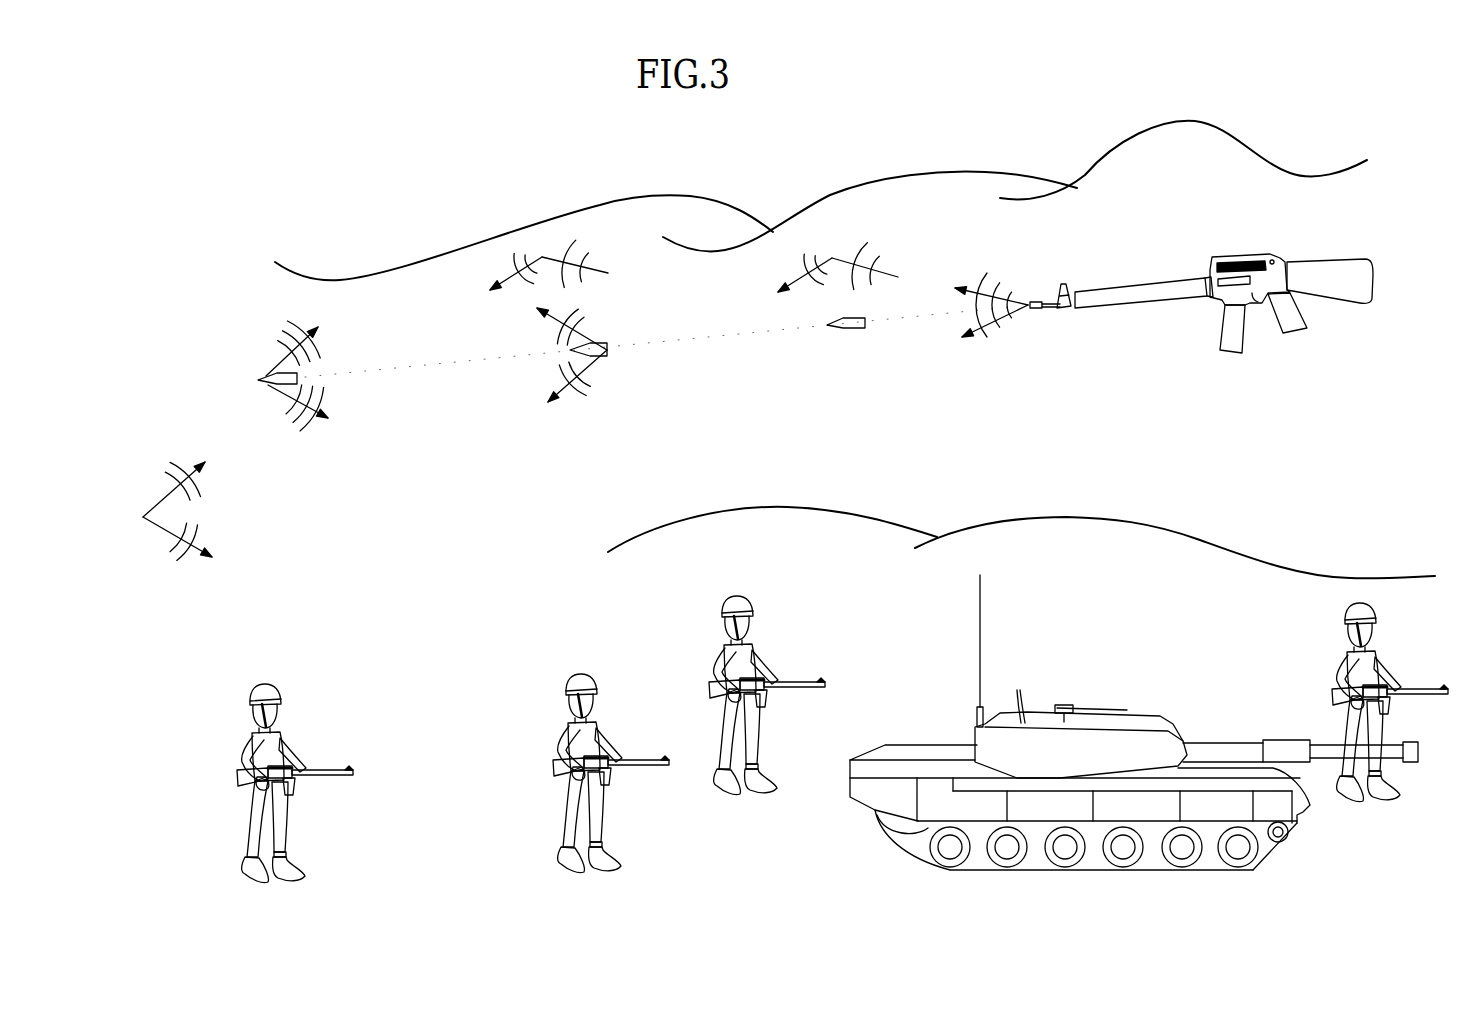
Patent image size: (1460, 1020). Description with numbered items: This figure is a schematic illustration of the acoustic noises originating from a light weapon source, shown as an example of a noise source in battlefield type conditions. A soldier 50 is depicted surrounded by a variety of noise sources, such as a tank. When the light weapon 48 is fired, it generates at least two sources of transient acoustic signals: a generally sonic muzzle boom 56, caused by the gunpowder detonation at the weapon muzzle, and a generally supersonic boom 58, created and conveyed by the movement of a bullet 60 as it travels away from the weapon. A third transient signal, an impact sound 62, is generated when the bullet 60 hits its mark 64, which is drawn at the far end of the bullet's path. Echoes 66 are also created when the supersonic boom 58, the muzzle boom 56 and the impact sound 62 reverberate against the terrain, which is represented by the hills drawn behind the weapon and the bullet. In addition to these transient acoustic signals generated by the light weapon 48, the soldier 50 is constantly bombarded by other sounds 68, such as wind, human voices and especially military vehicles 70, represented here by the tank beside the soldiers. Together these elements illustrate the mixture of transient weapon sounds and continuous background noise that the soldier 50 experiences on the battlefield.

The light weapon 48 is at (1237, 258).
The soldier 50 is at (263, 683).
The muzzle boom 56 is at (983, 285).
The supersonic boom 58 is at (568, 352).
The bullet 60 is at (857, 328).
The impact sound 62 is at (287, 397).
The mark 64 is at (277, 372).
The echoes 66 is at (518, 285).
The other sounds 68 is at (157, 497).
The military vehicles 70 is at (1137, 717).